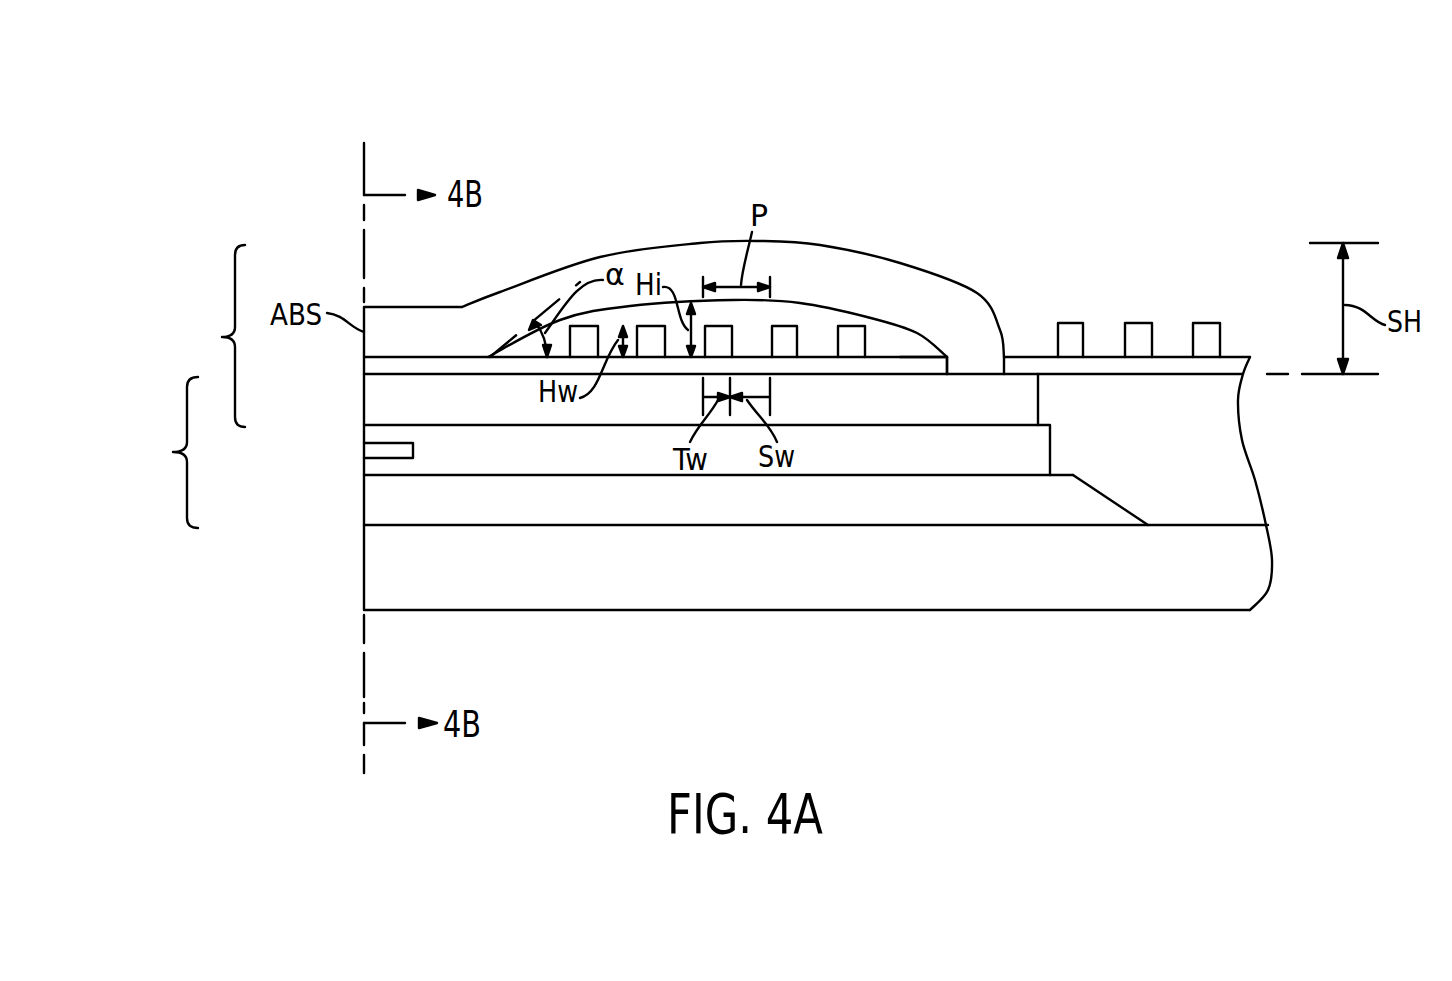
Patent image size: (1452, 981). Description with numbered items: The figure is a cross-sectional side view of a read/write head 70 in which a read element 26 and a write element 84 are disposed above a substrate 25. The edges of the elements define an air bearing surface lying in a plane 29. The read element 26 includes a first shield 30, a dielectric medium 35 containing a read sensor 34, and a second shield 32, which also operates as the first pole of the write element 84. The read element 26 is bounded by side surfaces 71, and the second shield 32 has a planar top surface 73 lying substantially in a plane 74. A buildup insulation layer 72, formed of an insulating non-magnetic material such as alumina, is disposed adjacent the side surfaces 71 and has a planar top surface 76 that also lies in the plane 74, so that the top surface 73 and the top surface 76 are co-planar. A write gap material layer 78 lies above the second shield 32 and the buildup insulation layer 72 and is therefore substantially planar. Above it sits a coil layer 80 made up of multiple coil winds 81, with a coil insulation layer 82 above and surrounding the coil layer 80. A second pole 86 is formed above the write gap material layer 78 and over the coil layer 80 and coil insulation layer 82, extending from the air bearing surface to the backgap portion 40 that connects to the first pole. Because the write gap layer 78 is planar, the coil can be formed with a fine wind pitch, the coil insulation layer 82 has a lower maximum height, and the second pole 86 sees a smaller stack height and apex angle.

The read/write head 70 is at (962, 94).
The plane 29 is at (364, 172).
The write gap material layer 78 is at (405, 365).
The write element 84 is at (215, 336).
The read element 26 is at (169, 452).
The second shield 32 is at (515, 418).
The read sensor 34 is at (405, 453).
The dielectric medium 35 is at (563, 465).
The first shield 30 is at (508, 516).
The substrate 25 is at (469, 579).
The second pole 86 is at (898, 307).
The coil insulation layer 82 is at (822, 327).
The planar top surface 73 is at (907, 375).
The backgap portion 40 is at (977, 363).
The coil winds 81 is at (1070, 335).
The coil layer 80 is at (1245, 337).
The buildup insulation layer 72 is at (1122, 436).
The planar top surface 76 is at (1177, 375).
The plane 74 is at (1270, 375).
The side surfaces 71 is at (1123, 495).